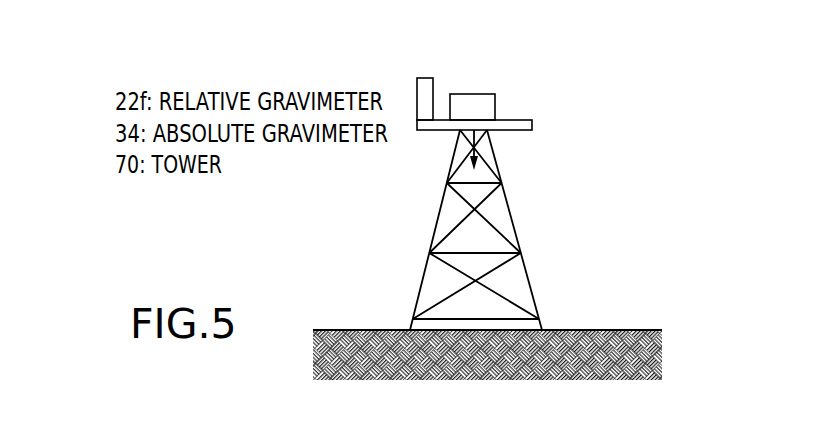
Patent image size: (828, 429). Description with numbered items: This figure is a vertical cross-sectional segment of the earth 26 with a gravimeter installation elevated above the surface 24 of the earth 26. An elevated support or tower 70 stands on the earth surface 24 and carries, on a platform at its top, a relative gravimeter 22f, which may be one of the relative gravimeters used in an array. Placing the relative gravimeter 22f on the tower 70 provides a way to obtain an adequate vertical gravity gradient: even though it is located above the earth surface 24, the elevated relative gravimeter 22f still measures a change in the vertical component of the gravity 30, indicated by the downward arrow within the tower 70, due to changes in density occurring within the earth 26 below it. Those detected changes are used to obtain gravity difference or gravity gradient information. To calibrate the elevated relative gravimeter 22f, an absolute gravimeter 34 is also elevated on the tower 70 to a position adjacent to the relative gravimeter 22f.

The relative gravimeter 22f is at (490, 103).
The absolute gravimeter 34 is at (417, 87).
The tower 70 is at (509, 212).
The vertical component of gravity 30 is at (477, 147).
The earth surface 24 is at (343, 330).
The earth 26 is at (613, 350).